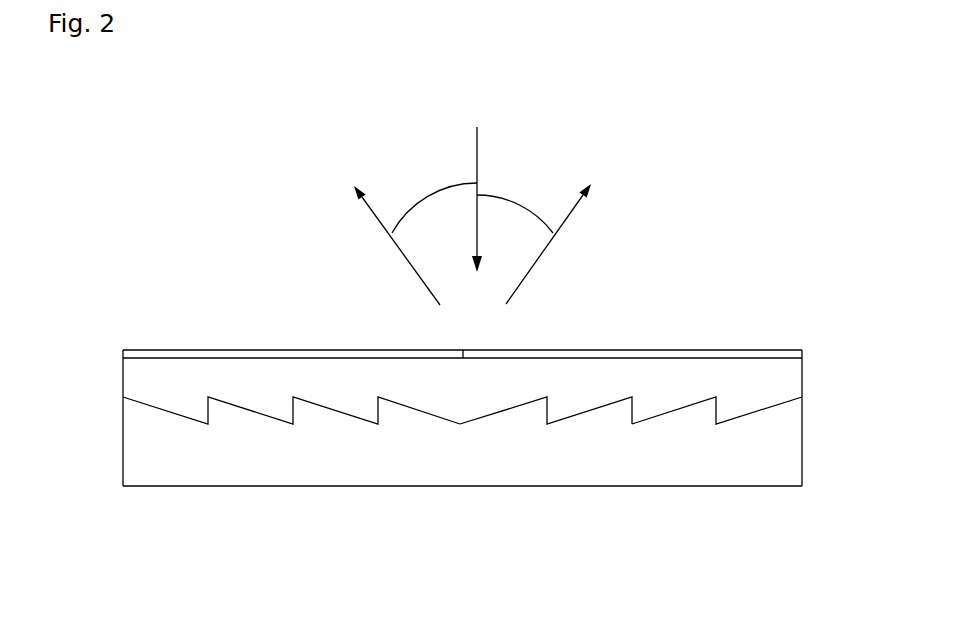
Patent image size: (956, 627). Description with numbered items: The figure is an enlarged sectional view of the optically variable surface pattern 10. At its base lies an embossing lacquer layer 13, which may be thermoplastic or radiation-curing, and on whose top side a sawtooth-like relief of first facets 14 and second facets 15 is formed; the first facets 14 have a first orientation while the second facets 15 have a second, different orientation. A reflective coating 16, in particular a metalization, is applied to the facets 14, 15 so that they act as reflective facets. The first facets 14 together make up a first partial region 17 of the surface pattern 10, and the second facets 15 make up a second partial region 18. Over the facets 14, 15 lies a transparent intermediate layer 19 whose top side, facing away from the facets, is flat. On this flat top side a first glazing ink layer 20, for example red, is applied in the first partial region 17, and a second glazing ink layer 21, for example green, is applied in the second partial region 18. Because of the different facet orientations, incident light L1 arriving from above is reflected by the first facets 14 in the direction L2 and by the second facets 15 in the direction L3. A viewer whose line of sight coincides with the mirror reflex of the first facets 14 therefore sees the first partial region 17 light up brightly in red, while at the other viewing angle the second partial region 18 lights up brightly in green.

The optically variable surface pattern 10 is at (178, 338).
The embossing lacquer layer 13 is at (780, 467).
The first facets 14 is at (188, 420).
The second facets 15 is at (494, 417).
The reflective coating 16 is at (690, 398).
The first partial region 17 is at (291, 499).
The second partial region 18 is at (595, 499).
The transparent intermediate layer 19 is at (300, 375).
The first glazing ink layer 20 is at (223, 350).
The second glazing ink layer 21 is at (640, 350).
The incident light L1 is at (477, 143).
The direction of reflection by first facets L2 is at (566, 222).
The direction of reflection by second facets L3 is at (373, 218).